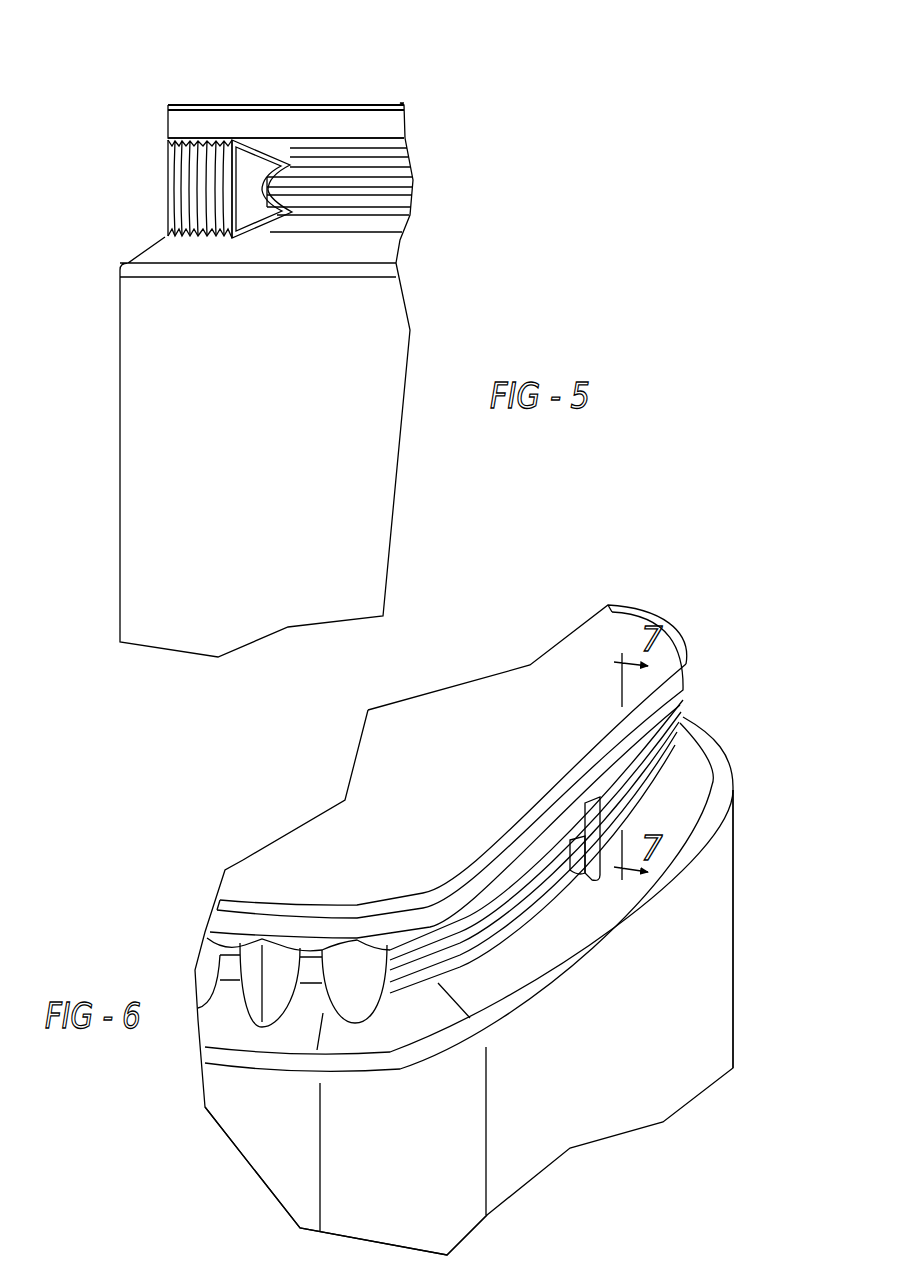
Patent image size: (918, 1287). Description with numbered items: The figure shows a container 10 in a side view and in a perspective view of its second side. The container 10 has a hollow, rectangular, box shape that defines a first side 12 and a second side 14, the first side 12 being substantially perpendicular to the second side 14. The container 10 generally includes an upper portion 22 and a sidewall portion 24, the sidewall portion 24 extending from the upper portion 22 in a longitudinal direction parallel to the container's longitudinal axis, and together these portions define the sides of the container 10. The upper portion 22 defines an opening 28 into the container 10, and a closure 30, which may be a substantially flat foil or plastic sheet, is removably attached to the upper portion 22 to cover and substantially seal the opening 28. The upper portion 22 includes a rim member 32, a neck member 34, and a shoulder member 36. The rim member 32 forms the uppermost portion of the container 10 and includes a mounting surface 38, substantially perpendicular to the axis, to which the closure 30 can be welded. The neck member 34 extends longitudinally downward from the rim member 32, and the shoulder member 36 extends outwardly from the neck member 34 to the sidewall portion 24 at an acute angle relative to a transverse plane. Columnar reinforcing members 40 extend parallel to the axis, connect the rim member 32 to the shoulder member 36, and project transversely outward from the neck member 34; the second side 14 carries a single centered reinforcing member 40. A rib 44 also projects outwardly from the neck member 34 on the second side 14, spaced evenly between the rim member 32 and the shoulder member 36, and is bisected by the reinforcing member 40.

In FIG. 6, the container 10 is at (273, 778).
In FIG. 6, the first side 12 is at (253, 1120).
In FIG. 6, the second side 14 is at (687, 953).
In FIG. 5, the upper portion 22 is at (422, 140).
In FIG. 6, the upper portion 22 is at (214, 1024).
In FIG. 5, the sidewall portion 24 is at (434, 336).
In FIG. 6, the sidewall portion 24 is at (288, 1164).
In FIG. 6, the opening 28 is at (612, 713).
In FIG. 5, the closure 30 is at (323, 105).
In FIG. 6, the closure 30 is at (438, 727).
In FIG. 5, the rim member 32 is at (376, 127).
In FIG. 6, the rim member 32 is at (493, 868).
In FIG. 5, the neck member 34 is at (400, 167).
In FIG. 6, the neck member 34 is at (468, 917).
In FIG. 5, the shoulder member 36 is at (398, 232).
In FIG. 6, the shoulder member 36 is at (562, 915).
In FIG. 5, the mounting surface 38 is at (170, 108).
In FIG. 6, the mounting surface 38 is at (613, 733).
In FIG. 5, the reinforcing member 40 is at (242, 203).
In FIG. 6, the reinforcing member 40 is at (592, 880).
In FIG. 5, the rib 44 is at (323, 188).
In FIG. 6, the rib 44 is at (500, 905).